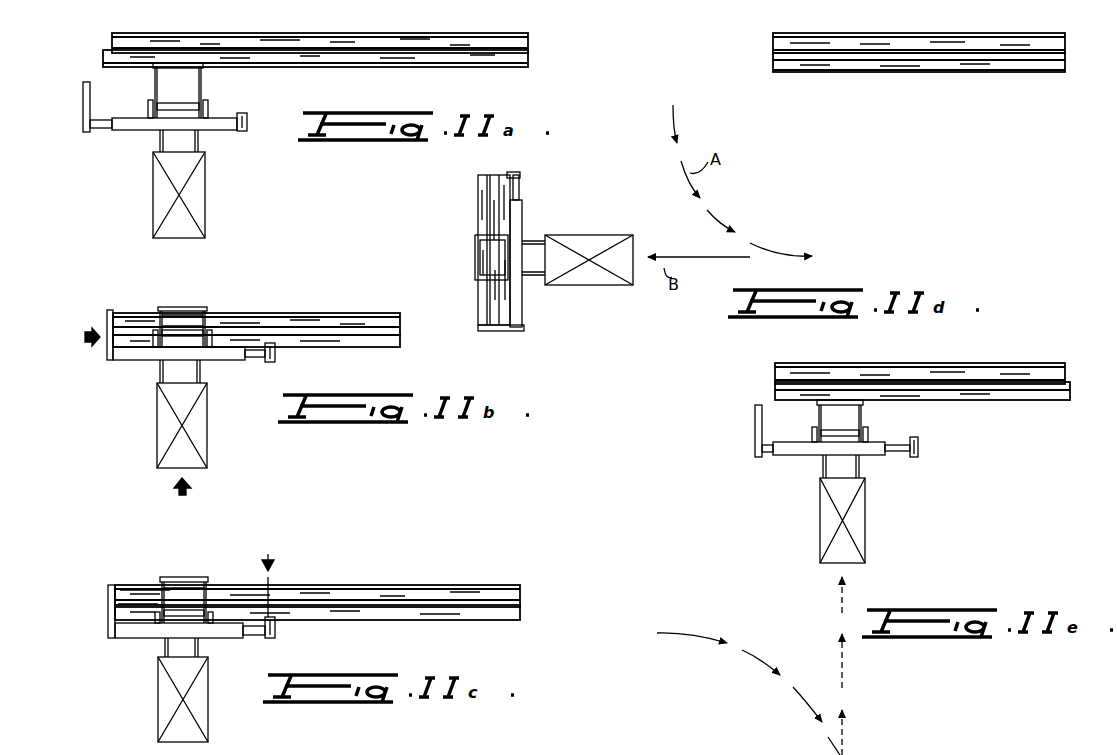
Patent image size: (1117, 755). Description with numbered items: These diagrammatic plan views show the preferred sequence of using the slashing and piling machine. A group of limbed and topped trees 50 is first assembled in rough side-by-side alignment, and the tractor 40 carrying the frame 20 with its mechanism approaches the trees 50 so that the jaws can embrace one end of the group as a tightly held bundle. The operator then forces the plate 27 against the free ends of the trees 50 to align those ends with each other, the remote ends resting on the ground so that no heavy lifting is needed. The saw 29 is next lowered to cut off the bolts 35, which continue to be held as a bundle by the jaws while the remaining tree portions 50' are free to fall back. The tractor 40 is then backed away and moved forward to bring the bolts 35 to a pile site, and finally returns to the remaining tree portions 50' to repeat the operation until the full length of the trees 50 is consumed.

In FIG. 11A, the frame 20 is at (218, 130).
In FIG. 11B, the frame 20 is at (194, 345).
In FIG. 11C, the frame 20 is at (150, 633).
In FIG. 11D, the frame 20 is at (518, 222).
In FIG. 11E, the frame 20 is at (872, 455).
In FIG. 11A, the plate 27 is at (83, 96).
In FIG. 11B, the plate 27 is at (109, 318).
In FIG. 11D, the plate 27 is at (503, 332).
In FIG. 11E, the plate 27 is at (757, 428).
In FIG. 11C, the saw 29 is at (270, 583).
In FIG. 11C, the bolts 35 is at (130, 592).
In FIG. 11D, the bolts 35 is at (485, 205).
In FIG. 11A, the tractor 40 is at (205, 200).
In FIG. 11B, the tractor 40 is at (165, 423).
In FIG. 11C, the tractor 40 is at (200, 690).
In FIG. 11D, the tractor 40 is at (592, 238).
In FIG. 11E, the tractor 40 is at (853, 523).
In FIG. 11A, the trees 50 is at (315, 59).
In FIG. 11B, the trees 50 is at (256, 314).
In FIG. 11C, the remaining tree portions 50' is at (317, 588).
In FIG. 11D, the remaining tree portions 50' is at (919, 42).
In FIG. 11E, the remaining tree portions 50' is at (922, 364).